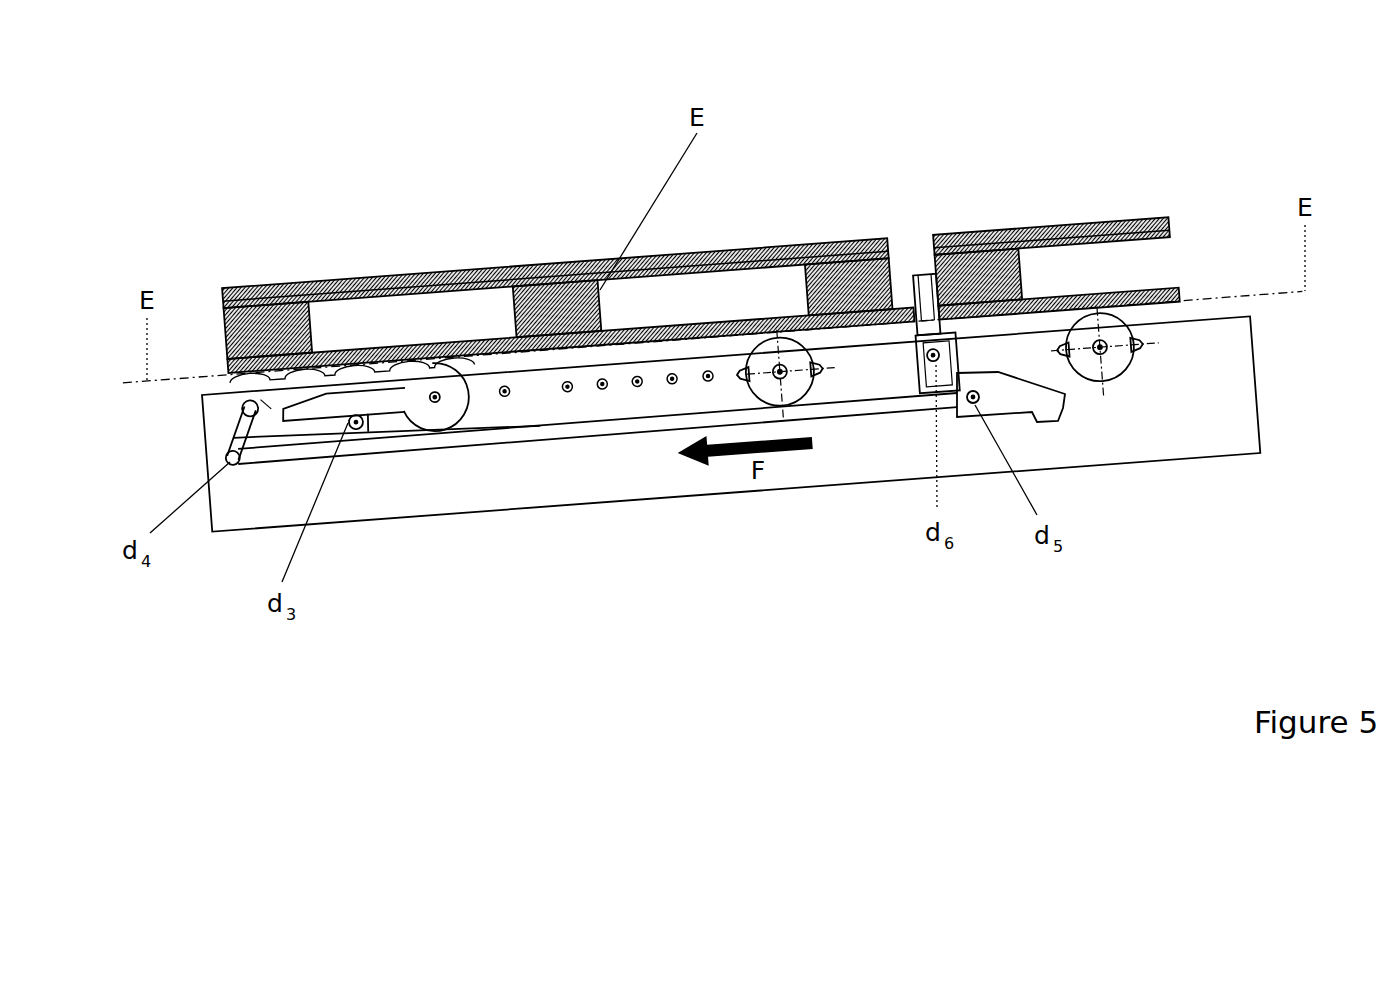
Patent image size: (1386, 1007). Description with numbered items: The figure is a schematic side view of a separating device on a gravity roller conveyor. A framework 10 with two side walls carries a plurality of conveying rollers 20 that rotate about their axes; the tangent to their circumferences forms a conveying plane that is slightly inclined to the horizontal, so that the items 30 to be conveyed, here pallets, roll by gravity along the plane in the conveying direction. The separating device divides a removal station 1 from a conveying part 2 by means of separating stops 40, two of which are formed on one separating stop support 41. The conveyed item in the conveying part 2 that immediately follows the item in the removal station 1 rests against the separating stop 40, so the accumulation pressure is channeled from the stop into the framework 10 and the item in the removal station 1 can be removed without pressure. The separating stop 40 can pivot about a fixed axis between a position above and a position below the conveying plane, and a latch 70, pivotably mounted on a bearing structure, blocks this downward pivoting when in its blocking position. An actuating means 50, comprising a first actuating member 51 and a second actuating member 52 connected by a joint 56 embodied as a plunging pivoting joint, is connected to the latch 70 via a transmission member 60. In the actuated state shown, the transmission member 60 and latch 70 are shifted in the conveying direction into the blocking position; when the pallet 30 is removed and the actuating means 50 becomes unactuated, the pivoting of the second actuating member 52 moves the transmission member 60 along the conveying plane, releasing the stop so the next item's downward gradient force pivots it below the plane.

The removal station 1 is at (572, 183).
The conveying part 2 is at (1088, 153).
The framework 10 is at (495, 482).
The conveying rollers 20 is at (793, 380).
The items to be conveyed 30 is at (275, 305).
The separating stop 40 is at (930, 320).
The separating stop support 41 is at (942, 378).
The actuating means 50 is at (322, 409).
The first actuating member 51 is at (360, 395).
The second actuating member 52 is at (228, 350).
The joint 56 is at (353, 420).
The transmission member 60 is at (673, 423).
The latch 70 is at (1020, 395).